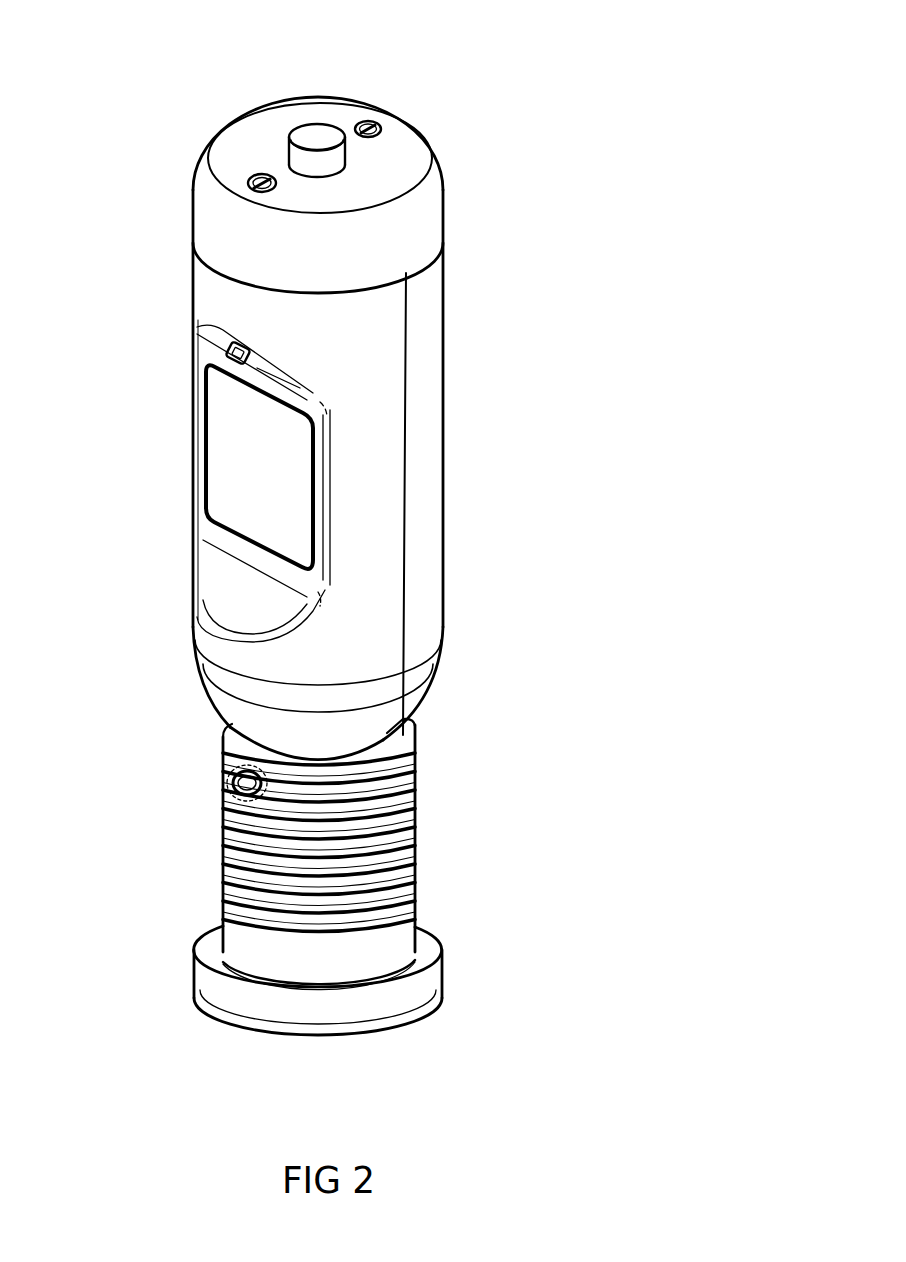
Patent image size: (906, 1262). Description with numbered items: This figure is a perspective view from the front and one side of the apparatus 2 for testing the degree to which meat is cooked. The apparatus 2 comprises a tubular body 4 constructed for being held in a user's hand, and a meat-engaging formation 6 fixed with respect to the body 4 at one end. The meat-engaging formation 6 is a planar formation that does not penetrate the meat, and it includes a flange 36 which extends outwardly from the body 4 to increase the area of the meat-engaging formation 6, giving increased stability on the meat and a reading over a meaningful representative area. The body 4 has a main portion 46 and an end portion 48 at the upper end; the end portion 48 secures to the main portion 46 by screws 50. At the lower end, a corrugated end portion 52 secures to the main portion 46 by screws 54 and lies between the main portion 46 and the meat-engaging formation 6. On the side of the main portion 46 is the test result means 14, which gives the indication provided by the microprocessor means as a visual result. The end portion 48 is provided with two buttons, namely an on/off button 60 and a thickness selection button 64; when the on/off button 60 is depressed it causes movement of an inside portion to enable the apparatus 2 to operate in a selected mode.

The apparatus 2 is at (520, 85).
The body 4 is at (447, 513).
The meat-engaging formation 6 is at (402, 1015).
The test result means 14 is at (230, 482).
The flange 36 is at (423, 963).
The main portion 46 is at (428, 372).
The end portion 48 is at (417, 225).
The screws 50 is at (256, 176).
The end portion 52 is at (413, 835).
The screws 54 is at (228, 786).
The on/off button 60 is at (317, 134).
The thickness selection button 64 is at (228, 352).